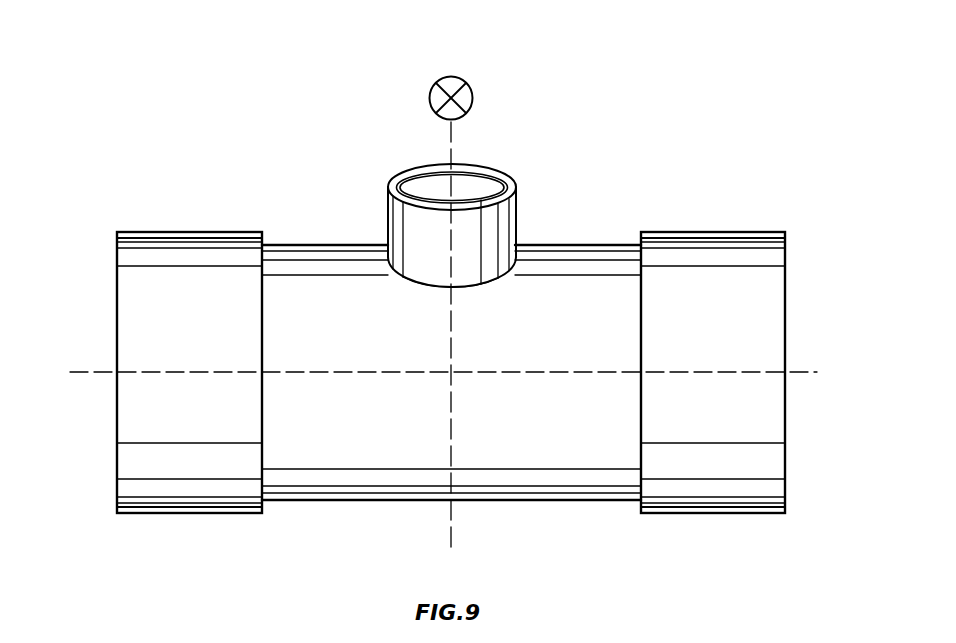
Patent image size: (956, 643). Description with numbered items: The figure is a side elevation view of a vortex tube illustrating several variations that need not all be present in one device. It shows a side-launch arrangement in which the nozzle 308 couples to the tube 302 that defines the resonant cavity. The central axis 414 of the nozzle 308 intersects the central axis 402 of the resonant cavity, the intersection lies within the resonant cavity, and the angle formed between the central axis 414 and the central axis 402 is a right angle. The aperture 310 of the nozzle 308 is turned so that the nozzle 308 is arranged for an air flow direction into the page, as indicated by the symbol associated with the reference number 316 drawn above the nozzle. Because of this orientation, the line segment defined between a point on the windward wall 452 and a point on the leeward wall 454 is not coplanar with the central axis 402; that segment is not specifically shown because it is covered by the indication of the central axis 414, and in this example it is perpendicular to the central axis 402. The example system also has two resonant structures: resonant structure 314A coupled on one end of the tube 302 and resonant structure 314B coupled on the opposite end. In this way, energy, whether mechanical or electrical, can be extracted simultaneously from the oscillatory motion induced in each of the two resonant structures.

The tube 302 is at (587, 342).
The nozzle 308 is at (517, 209).
The aperture 310 is at (474, 186).
The resonant structure 314A is at (740, 232).
The resonant structure 314B is at (201, 232).
The air flow direction symbol 316 is at (472, 92).
The central axis of the resonant cavity 402 is at (96, 372).
The central axis of the nozzle 414 is at (452, 522).
The windward wall 452 is at (435, 273).
The leeward wall 454 is at (413, 168).